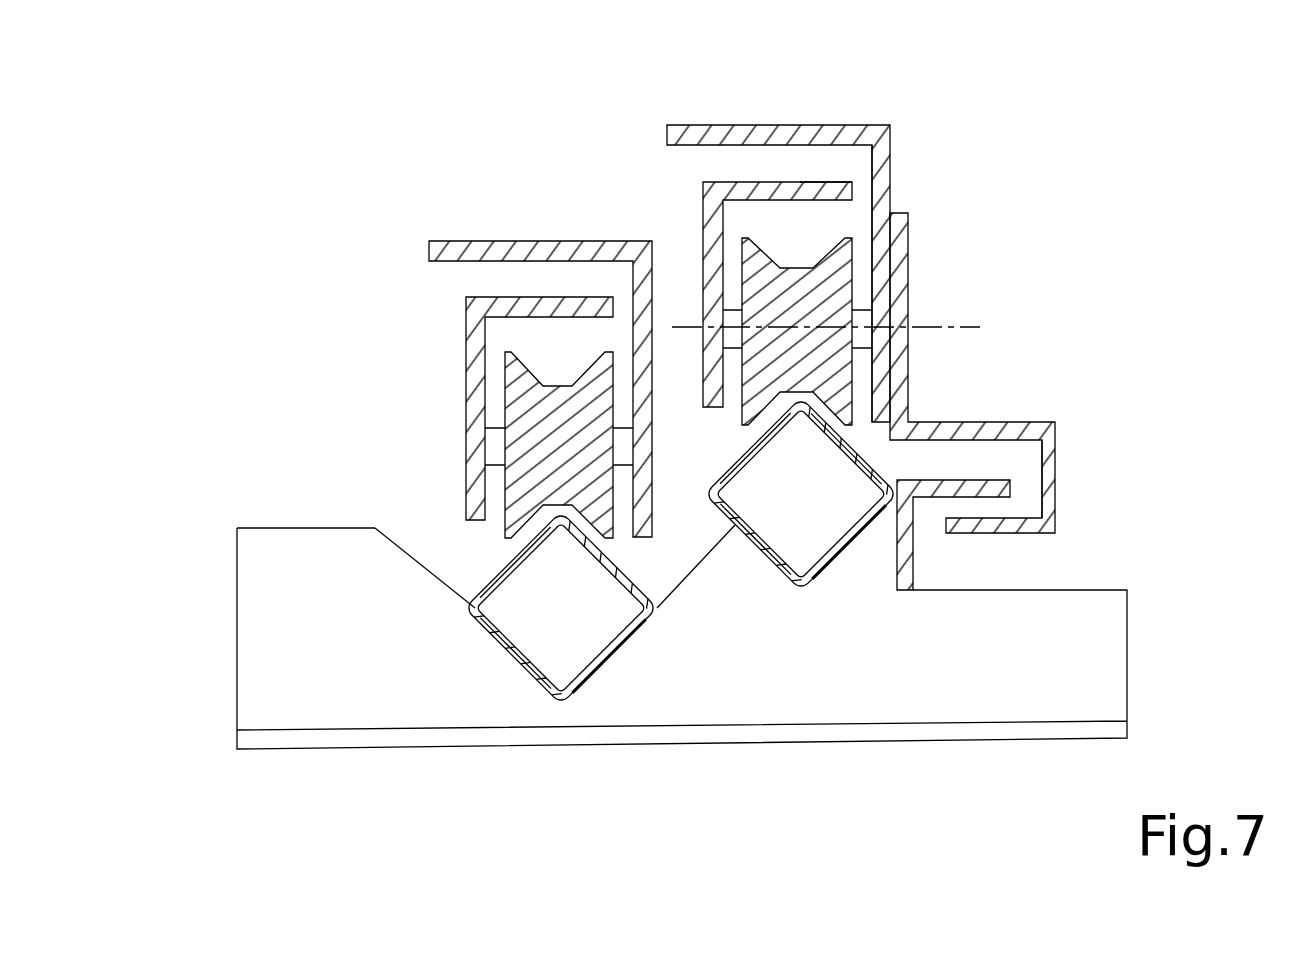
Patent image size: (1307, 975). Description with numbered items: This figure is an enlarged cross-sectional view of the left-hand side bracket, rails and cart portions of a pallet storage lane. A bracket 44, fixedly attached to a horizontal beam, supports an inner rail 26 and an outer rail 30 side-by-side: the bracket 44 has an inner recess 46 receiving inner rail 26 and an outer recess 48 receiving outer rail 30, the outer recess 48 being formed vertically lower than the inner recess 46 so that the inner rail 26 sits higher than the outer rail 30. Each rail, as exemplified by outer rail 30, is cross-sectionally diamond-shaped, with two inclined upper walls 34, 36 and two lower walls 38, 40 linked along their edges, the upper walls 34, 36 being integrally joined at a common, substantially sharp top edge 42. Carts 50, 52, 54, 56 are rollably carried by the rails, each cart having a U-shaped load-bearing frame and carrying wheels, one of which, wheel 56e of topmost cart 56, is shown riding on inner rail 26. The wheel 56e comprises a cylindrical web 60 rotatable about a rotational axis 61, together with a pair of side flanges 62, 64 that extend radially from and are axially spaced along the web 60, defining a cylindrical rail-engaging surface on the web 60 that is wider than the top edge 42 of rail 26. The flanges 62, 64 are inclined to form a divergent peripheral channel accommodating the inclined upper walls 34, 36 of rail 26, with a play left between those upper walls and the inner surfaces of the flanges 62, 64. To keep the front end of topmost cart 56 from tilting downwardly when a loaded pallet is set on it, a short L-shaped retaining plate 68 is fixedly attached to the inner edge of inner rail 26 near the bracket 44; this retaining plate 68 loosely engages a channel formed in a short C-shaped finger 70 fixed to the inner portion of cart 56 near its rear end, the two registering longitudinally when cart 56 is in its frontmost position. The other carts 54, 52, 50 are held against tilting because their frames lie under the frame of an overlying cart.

The inner rail 26 is at (863, 512).
The outer rail 30 is at (470, 557).
The upper wall 34 is at (893, 467).
The upper wall 36 is at (508, 558).
The lower wall 38 is at (607, 647).
The lower wall 40 is at (500, 623).
The top edge 42 is at (557, 505).
The bracket 44 is at (328, 670).
The inner recess 46 is at (762, 527).
The outer recess 48 is at (423, 562).
The cart 50 is at (515, 297).
The cart 52 is at (540, 240).
The cart 54 is at (740, 187).
The cart 56 is at (800, 127).
The wheel 56e is at (858, 288).
The cylindrical web 60 is at (800, 270).
The rotational axis 61 is at (967, 330).
The side flange 62 is at (793, 270).
The side flange 64 is at (903, 217).
The retaining plate 68 is at (970, 492).
The C-shaped finger 70 is at (1055, 500).